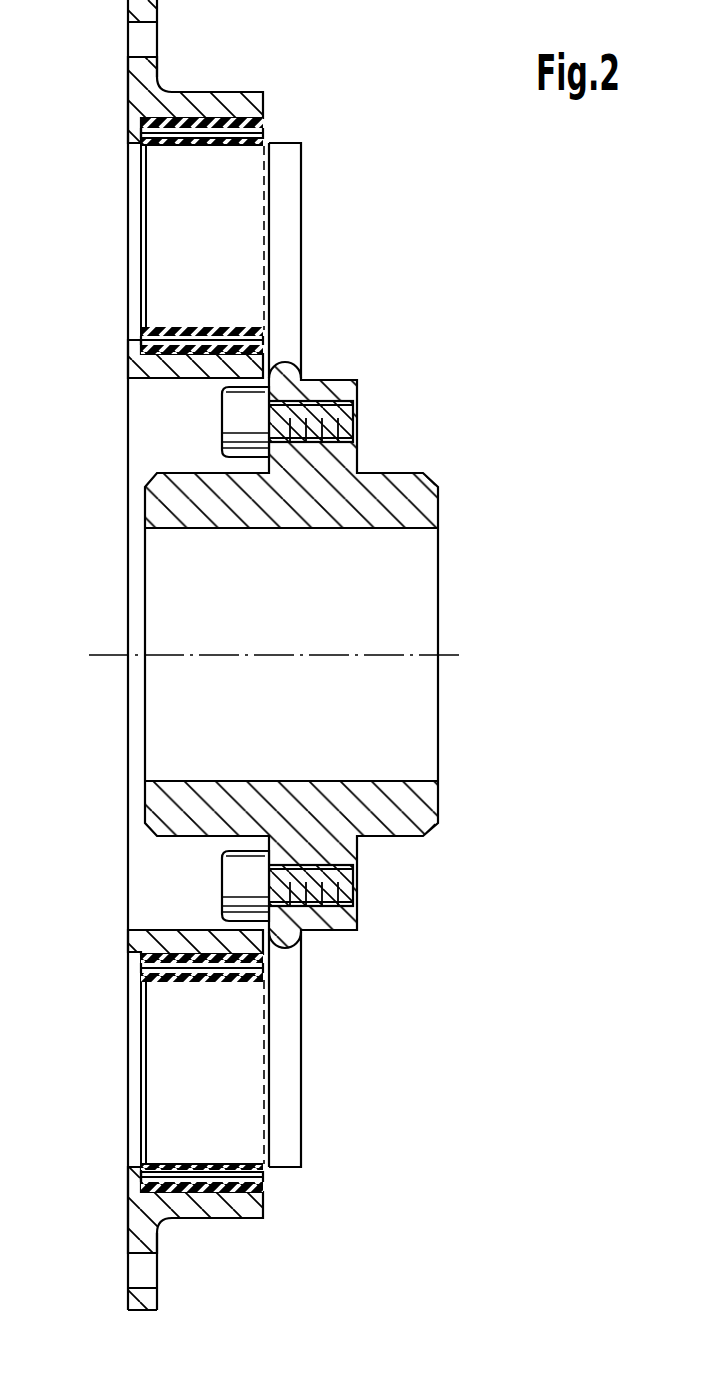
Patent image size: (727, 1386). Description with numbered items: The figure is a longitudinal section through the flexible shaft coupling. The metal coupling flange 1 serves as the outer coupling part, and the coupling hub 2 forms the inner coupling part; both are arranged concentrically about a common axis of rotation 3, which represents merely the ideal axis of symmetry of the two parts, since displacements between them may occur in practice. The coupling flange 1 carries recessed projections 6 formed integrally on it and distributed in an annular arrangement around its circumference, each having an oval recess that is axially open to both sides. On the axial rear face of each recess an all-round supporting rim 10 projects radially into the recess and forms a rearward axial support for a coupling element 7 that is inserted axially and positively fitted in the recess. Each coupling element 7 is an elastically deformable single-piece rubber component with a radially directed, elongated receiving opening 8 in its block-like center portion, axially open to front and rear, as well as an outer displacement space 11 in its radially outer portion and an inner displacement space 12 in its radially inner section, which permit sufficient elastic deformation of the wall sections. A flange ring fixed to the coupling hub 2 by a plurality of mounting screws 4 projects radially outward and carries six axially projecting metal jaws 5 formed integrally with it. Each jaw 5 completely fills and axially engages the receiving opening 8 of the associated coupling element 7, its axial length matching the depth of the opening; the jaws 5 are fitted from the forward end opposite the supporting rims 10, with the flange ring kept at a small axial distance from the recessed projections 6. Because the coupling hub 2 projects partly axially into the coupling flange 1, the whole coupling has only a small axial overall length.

The coupling flange 1 is at (162, 72).
The coupling hub 2 is at (377, 482).
The axis of rotation 3 is at (465, 655).
The mounting screws 4 is at (235, 414).
The jaw 5 is at (258, 203).
The recessed projection 6 is at (238, 100).
The coupling element 7 is at (145, 326).
The receiving opening 8 is at (240, 329).
The supporting rim 10 is at (140, 139).
The outer displacement space 11 is at (262, 133).
The inner displacement space 12 is at (258, 341).